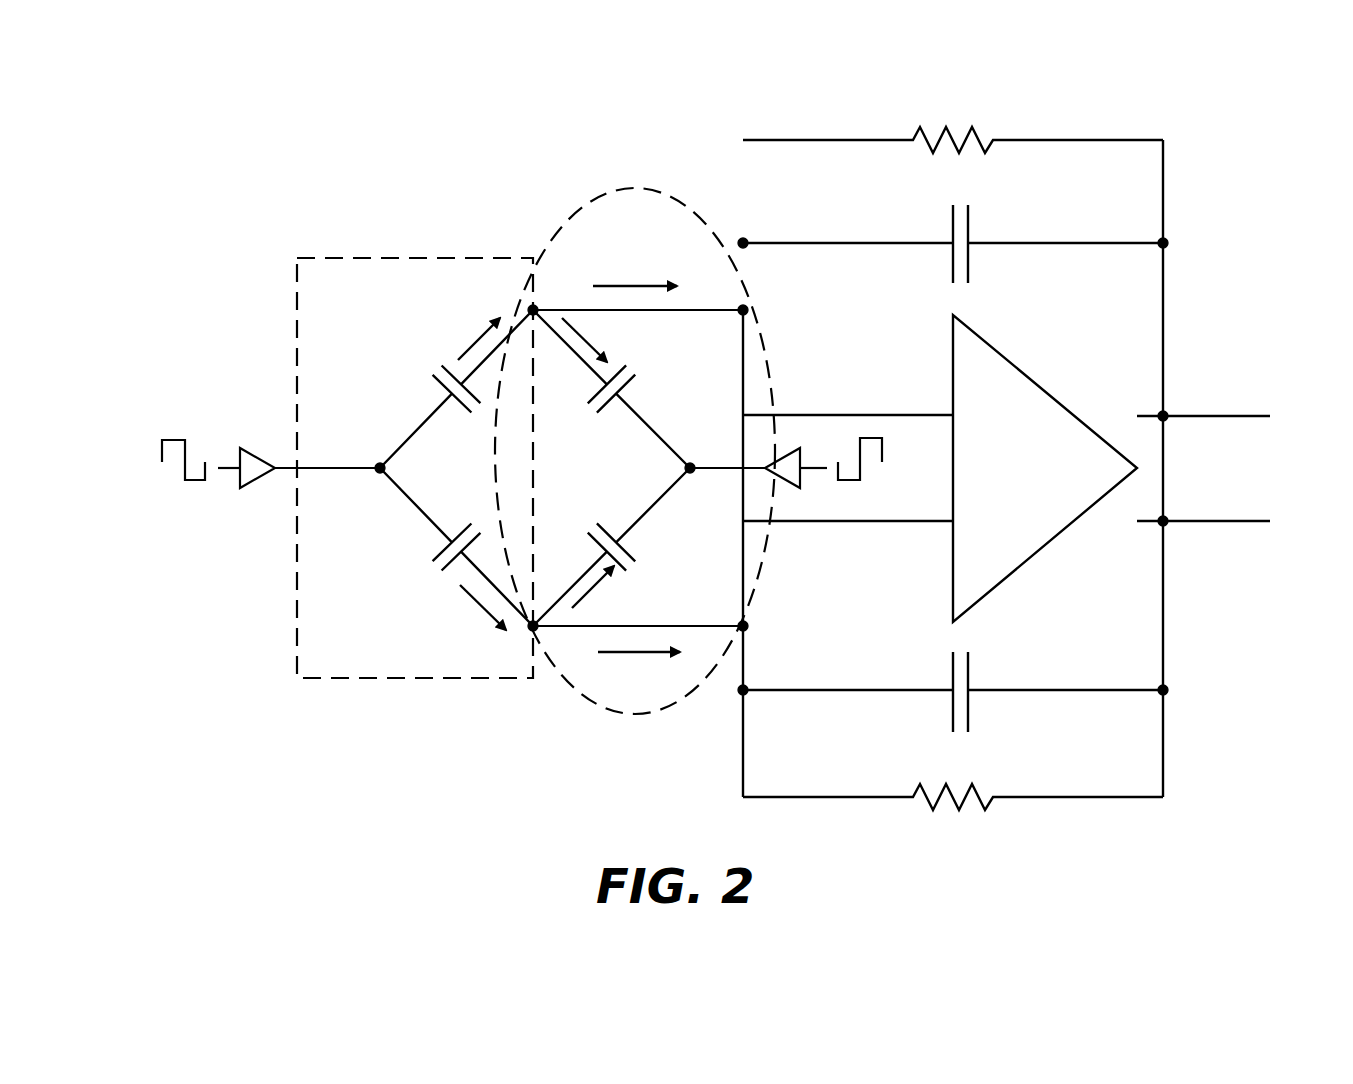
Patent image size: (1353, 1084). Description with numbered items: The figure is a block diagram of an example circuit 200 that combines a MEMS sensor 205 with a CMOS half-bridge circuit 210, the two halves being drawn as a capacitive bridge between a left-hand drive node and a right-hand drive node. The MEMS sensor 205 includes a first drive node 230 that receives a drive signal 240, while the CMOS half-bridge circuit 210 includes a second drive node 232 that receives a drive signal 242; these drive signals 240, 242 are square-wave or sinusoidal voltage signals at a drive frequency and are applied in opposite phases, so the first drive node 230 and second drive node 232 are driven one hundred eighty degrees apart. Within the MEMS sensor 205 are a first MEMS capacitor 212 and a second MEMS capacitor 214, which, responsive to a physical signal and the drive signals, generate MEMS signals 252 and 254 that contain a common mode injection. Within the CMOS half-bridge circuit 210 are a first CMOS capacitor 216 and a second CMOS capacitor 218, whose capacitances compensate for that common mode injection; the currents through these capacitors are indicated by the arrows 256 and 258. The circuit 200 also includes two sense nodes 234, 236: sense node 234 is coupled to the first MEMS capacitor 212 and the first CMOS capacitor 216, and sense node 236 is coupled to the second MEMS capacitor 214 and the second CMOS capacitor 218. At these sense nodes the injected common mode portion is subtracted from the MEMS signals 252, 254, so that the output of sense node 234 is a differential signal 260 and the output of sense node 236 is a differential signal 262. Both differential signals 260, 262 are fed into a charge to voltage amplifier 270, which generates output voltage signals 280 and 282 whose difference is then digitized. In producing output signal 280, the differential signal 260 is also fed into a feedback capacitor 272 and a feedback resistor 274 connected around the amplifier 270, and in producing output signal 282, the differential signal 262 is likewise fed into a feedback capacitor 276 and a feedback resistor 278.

The circuit 200 is at (250, 170).
The MEMS sensor 205 is at (360, 678).
The CMOS half-bridge circuit 210 is at (668, 714).
The first MEMS capacitor 212 is at (425, 372).
The second MEMS capacitor 214 is at (425, 553).
The first CMOS capacitor 216 is at (590, 408).
The second CMOS capacitor 218 is at (618, 538).
The first drive node 230 is at (380, 470).
The second drive node 232 is at (690, 468).
The sense node 234 is at (535, 308).
The sense node 236 is at (533, 628).
The drive signal 240 is at (162, 448).
The drive signal 242 is at (882, 445).
The MEMS signal 252 is at (480, 338).
The MEMS signal 254 is at (474, 598).
The current direction through first half-bridge capacitor 256 is at (570, 318).
The current direction through second half-bridge capacitor 258 is at (582, 596).
The differential signal 260 is at (642, 280).
The differential signal 262 is at (655, 658).
The charge to voltage (C2V) amplifier 270 is at (990, 340).
The feedback capacitor 272 is at (970, 233).
The feedback resistor 274 is at (980, 135).
The feedback capacitor 276 is at (970, 680).
The feedback resistor 278 is at (988, 805).
The output voltage signal 280 is at (1213, 383).
The output voltage signal 282 is at (1240, 506).